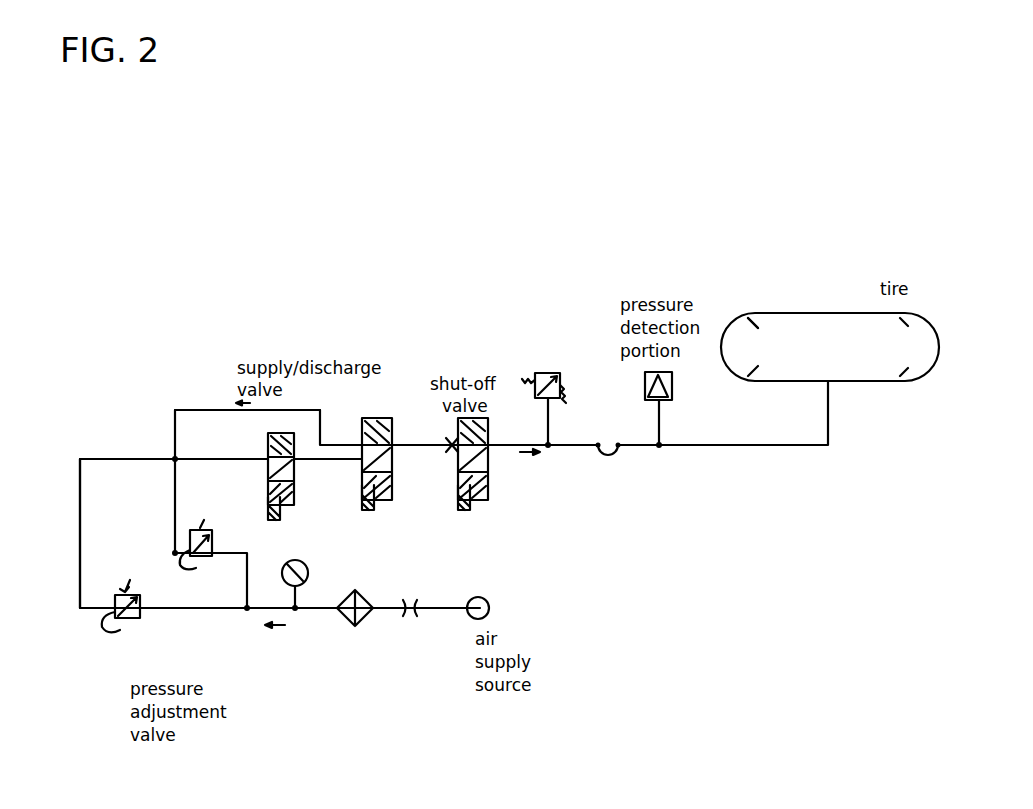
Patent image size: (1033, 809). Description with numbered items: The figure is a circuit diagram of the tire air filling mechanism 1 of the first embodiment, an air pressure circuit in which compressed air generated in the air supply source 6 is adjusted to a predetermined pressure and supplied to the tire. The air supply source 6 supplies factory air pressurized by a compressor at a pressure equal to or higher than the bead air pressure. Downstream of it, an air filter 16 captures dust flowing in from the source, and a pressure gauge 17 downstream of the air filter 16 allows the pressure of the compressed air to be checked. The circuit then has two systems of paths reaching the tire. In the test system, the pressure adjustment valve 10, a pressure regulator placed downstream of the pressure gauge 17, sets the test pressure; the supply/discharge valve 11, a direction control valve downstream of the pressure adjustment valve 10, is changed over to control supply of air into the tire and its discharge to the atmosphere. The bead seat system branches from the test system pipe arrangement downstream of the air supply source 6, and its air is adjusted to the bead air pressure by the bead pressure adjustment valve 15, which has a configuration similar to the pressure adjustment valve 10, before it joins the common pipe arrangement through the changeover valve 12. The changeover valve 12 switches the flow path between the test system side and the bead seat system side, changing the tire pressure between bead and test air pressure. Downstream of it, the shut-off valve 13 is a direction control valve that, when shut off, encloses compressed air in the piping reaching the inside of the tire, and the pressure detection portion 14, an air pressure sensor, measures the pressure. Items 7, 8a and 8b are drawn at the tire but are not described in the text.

The tire air filling mechanism 1 is at (299, 319).
The pressure adjustment valve 10 is at (140, 618).
The supply/discharge valve 11 is at (294, 490).
The changeover valve 12 is at (392, 480).
The shut-off valve 13 is at (488, 480).
The pressure detection portion 14 is at (672, 388).
The bead pressure adjustment valve 15 is at (212, 540).
The air filter 16 is at (368, 622).
The pressure gauge 17 is at (308, 566).
The air supply source 6 is at (490, 600).
The tire 7 is at (755, 320).
The tire air chamber 8a is at (848, 313).
The wheel 8b is at (866, 383).